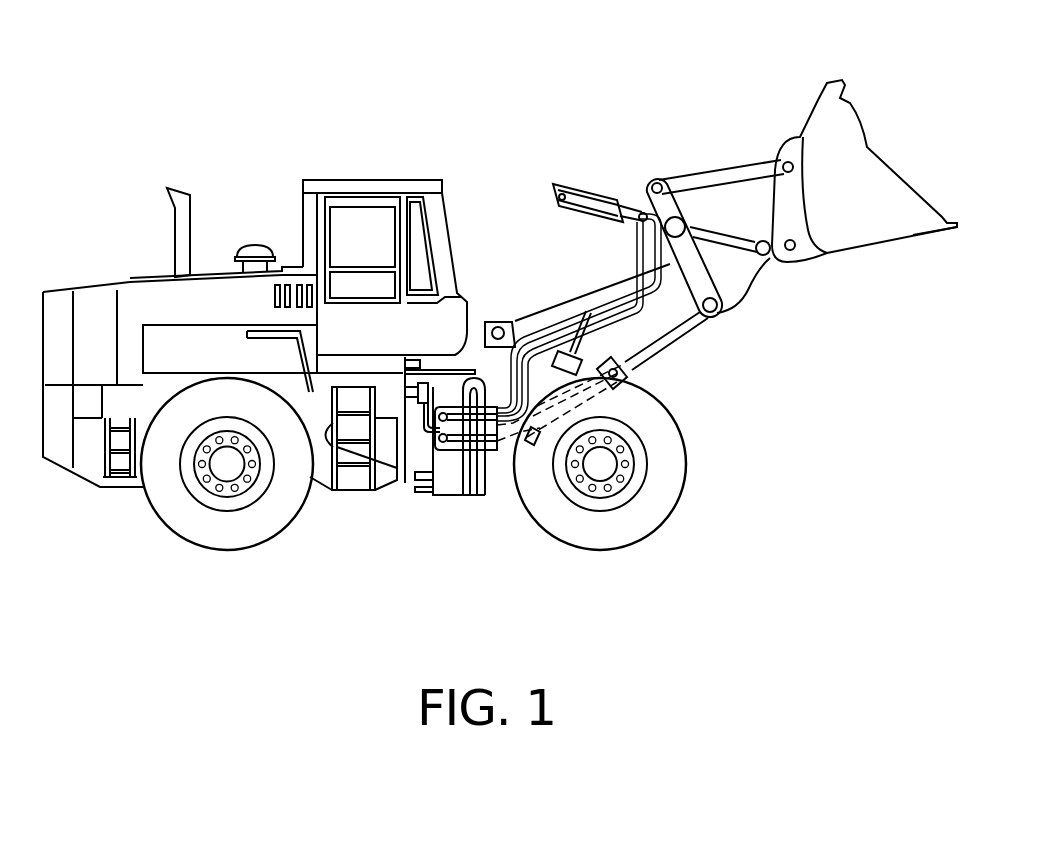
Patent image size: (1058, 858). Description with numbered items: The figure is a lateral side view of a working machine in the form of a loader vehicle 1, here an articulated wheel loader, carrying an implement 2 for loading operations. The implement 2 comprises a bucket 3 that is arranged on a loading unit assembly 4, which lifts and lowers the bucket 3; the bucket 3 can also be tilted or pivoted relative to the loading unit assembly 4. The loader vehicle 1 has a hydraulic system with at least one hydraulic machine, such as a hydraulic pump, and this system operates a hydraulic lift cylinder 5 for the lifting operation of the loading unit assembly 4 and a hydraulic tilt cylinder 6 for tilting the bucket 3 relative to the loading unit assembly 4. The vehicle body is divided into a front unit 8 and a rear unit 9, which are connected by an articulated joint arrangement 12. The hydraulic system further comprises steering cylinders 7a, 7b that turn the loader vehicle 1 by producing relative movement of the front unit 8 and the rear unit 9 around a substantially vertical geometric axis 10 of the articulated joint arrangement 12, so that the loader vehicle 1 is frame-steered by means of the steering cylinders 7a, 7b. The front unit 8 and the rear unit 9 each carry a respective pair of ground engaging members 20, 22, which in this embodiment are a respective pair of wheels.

The loader vehicle 1 is at (362, 136).
The implement 2 is at (715, 100).
The bucket 3 is at (865, 218).
The loading unit assembly 4 is at (763, 310).
The hydraulic lift cylinder 5 is at (640, 335).
The hydraulic tilt cylinder 6 is at (592, 177).
The steering cylinder 7a is at (410, 390).
The steering cylinder 7b is at (579, 313).
The front unit 8 is at (497, 482).
The rear unit 9 is at (85, 463).
The vertical geometric axis 10 is at (432, 487).
The articulated joint arrangement 12 is at (463, 297).
The ground engaging members 20 is at (593, 518).
The ground engaging members 22 is at (218, 522).